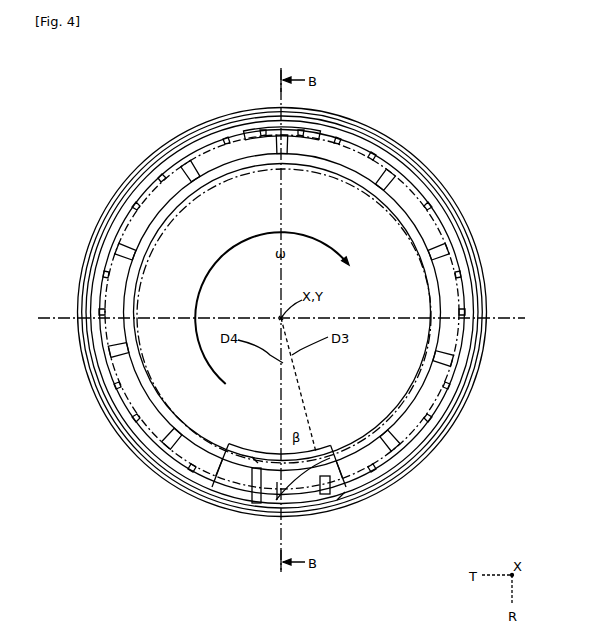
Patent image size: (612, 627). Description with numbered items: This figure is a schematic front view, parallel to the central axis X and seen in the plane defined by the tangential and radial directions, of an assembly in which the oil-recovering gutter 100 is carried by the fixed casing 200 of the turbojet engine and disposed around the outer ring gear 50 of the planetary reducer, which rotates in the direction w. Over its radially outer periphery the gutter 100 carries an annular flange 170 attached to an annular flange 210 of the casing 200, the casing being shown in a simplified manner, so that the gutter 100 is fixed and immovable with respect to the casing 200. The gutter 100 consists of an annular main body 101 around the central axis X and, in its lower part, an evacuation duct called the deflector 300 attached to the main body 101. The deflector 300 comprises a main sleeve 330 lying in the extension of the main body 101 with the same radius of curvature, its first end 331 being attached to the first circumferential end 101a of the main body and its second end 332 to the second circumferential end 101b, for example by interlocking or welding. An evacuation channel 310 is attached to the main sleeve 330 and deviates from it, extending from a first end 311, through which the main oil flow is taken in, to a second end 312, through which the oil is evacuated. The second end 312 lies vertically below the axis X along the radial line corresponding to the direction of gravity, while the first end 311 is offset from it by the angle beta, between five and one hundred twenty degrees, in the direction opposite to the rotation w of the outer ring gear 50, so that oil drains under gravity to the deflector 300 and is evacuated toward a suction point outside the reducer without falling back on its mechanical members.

The outer ring gear 50 is at (390, 260).
The gutter 100 is at (427, 195).
The main body 101 is at (373, 130).
The first circumferential end 101a is at (335, 440).
The second circumferential end 101b is at (233, 453).
The annular flange 170 is at (343, 125).
The fixed casing 200 is at (317, 110).
The annular flange 210 is at (240, 117).
The deflector 300 is at (318, 493).
The evacuation channel 310 is at (300, 487).
The first end 311 is at (337, 500).
The second end 312 is at (277, 510).
The main sleeve 330 is at (263, 478).
The first end 331 is at (318, 460).
The second end 332 is at (252, 457).